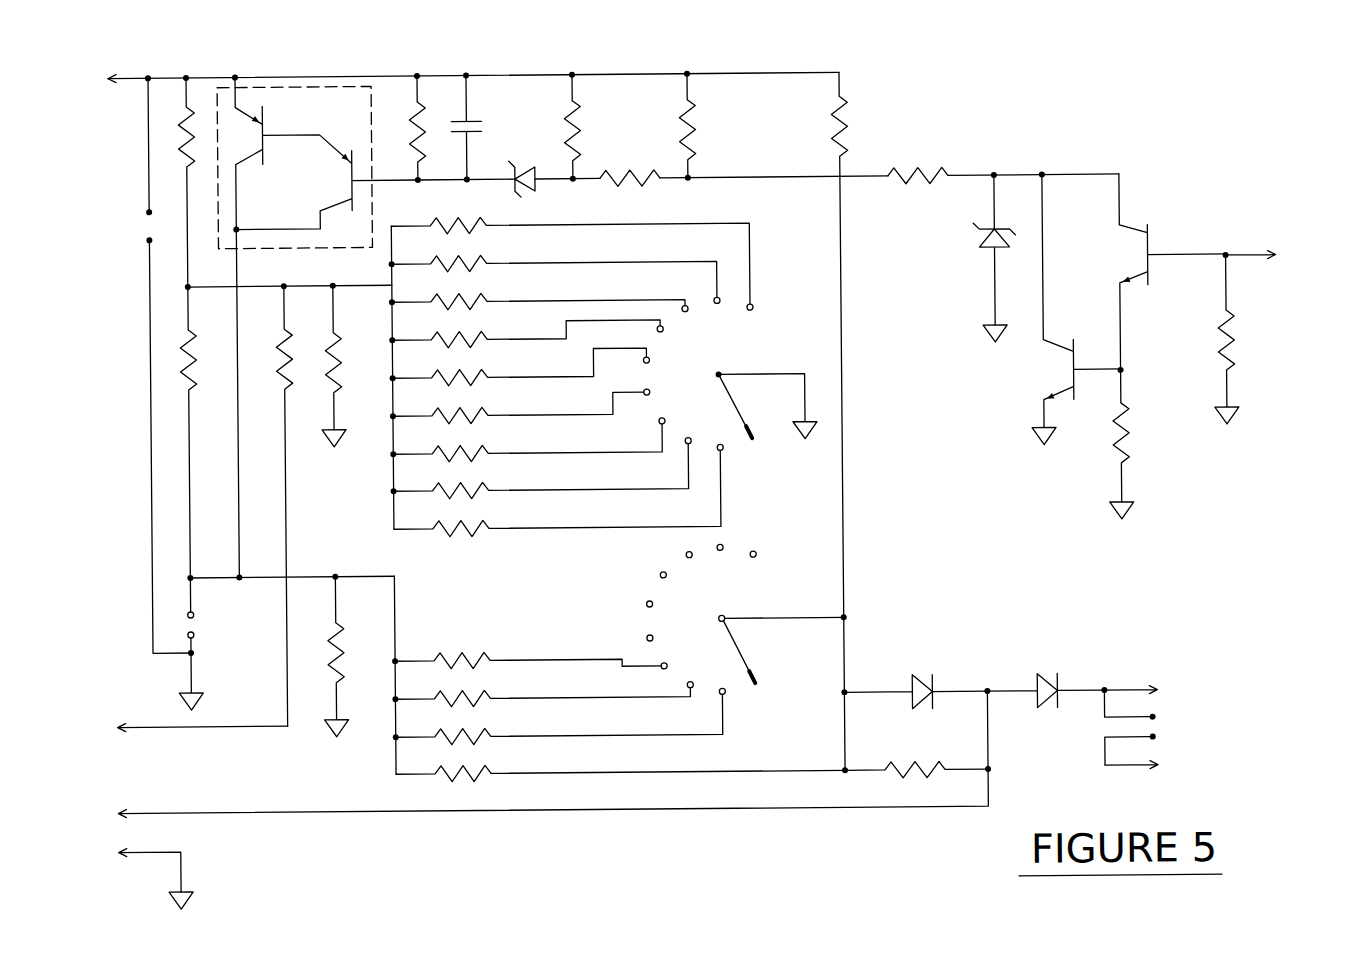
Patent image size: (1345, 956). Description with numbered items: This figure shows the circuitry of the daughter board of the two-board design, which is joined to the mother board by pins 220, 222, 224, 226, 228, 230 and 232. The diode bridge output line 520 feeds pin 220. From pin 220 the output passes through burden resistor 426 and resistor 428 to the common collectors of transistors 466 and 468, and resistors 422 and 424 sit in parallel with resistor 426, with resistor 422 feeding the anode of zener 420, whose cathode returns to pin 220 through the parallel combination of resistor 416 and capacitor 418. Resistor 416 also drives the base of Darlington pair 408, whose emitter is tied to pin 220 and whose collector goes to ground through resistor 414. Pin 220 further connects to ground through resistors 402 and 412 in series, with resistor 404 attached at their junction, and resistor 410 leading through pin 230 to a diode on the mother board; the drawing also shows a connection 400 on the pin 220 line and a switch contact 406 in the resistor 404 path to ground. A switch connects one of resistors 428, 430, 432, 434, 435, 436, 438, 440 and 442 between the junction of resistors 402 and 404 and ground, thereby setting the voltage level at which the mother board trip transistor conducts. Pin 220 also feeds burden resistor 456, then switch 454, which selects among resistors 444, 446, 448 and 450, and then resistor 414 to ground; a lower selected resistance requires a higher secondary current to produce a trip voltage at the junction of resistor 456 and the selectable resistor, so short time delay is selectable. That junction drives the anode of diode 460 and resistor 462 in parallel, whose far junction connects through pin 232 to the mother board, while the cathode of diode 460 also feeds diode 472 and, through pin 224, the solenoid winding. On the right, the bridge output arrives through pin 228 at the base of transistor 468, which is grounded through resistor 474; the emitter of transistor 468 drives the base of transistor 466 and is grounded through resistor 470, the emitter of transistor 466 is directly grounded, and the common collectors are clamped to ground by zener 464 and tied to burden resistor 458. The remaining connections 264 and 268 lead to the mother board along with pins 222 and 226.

The pin 220 is at (87, 80).
The pin 222 is at (1157, 765).
The pin 224 is at (1156, 690).
The pin 226 is at (132, 875).
The pin 228 is at (1276, 255).
The pin 230 is at (178, 727).
The pin 232 is at (528, 759).
The terminal 264 is at (1157, 744).
The terminal 268 is at (1156, 709).
The switch input 400 is at (145, 366).
The resistor 402 is at (168, 182).
The resistor 404 is at (171, 432).
The switch 406 is at (211, 644).
The Darlington pair 408 is at (318, 175).
The resistor 410 is at (267, 506).
The resistor 412 is at (351, 366).
The resistor 414 is at (355, 656).
The resistor 416 is at (399, 128).
The capacitor 418 is at (454, 127).
The zener 420 is at (520, 164).
The resistor 422 is at (549, 127).
The resistor 424 is at (630, 166).
The burden resistor 426 is at (664, 126).
The resistor 428 is at (572, 252).
The resistor 430 is at (555, 268).
The resistor 432 is at (540, 292).
The resistor 434 is at (527, 327).
The resistor 435 is at (520, 365).
The resistor 436 is at (521, 403).
The resistor 438 is at (529, 440).
The resistor 440 is at (542, 469).
The resistor 442 is at (558, 490).
The resistor 444 is at (531, 649).
The resistor 446 is at (544, 687).
The resistor 448 is at (560, 716).
The resistor 450 is at (620, 760).
The switch 454 is at (780, 526).
The resistor 456 is at (820, 421).
The resistor 458 is at (918, 162).
The diode 460 is at (916, 678).
The resistor 462 is at (916, 758).
The zener 464 is at (972, 259).
The transistor 466 is at (1073, 309).
The transistor 468 is at (1164, 271).
The resistor 470 is at (1104, 445).
The diode 472 is at (1046, 677).
The resistor 474 is at (1209, 340).
The diode bridge output line 520 is at (367, 73).